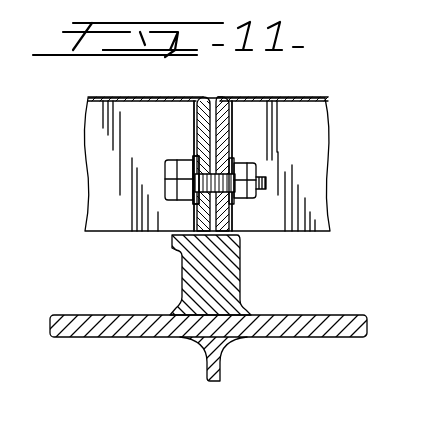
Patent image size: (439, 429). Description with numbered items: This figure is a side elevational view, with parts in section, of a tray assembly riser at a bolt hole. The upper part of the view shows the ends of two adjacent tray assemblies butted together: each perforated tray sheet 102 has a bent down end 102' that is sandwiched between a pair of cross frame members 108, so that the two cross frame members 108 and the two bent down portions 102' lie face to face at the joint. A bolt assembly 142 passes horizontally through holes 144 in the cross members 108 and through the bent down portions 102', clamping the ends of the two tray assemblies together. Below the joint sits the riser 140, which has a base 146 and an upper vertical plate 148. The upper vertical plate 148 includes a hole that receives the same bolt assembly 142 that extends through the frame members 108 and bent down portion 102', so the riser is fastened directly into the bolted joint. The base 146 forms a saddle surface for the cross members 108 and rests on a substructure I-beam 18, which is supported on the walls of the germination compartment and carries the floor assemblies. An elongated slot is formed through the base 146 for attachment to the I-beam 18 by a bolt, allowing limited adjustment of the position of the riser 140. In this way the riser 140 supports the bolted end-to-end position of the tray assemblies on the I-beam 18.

The I-beam 18 is at (133, 327).
The perforated tray sheet 102 is at (207, 143).
The end of tray sheet 102' is at (229, 166).
The cross frame member 108 is at (197, 115).
The riser 140 is at (240, 273).
The bolt assembly 142 is at (256, 178).
The hole 144 is at (236, 202).
The base 146 is at (222, 312).
The upper vertical plate 148 is at (183, 212).